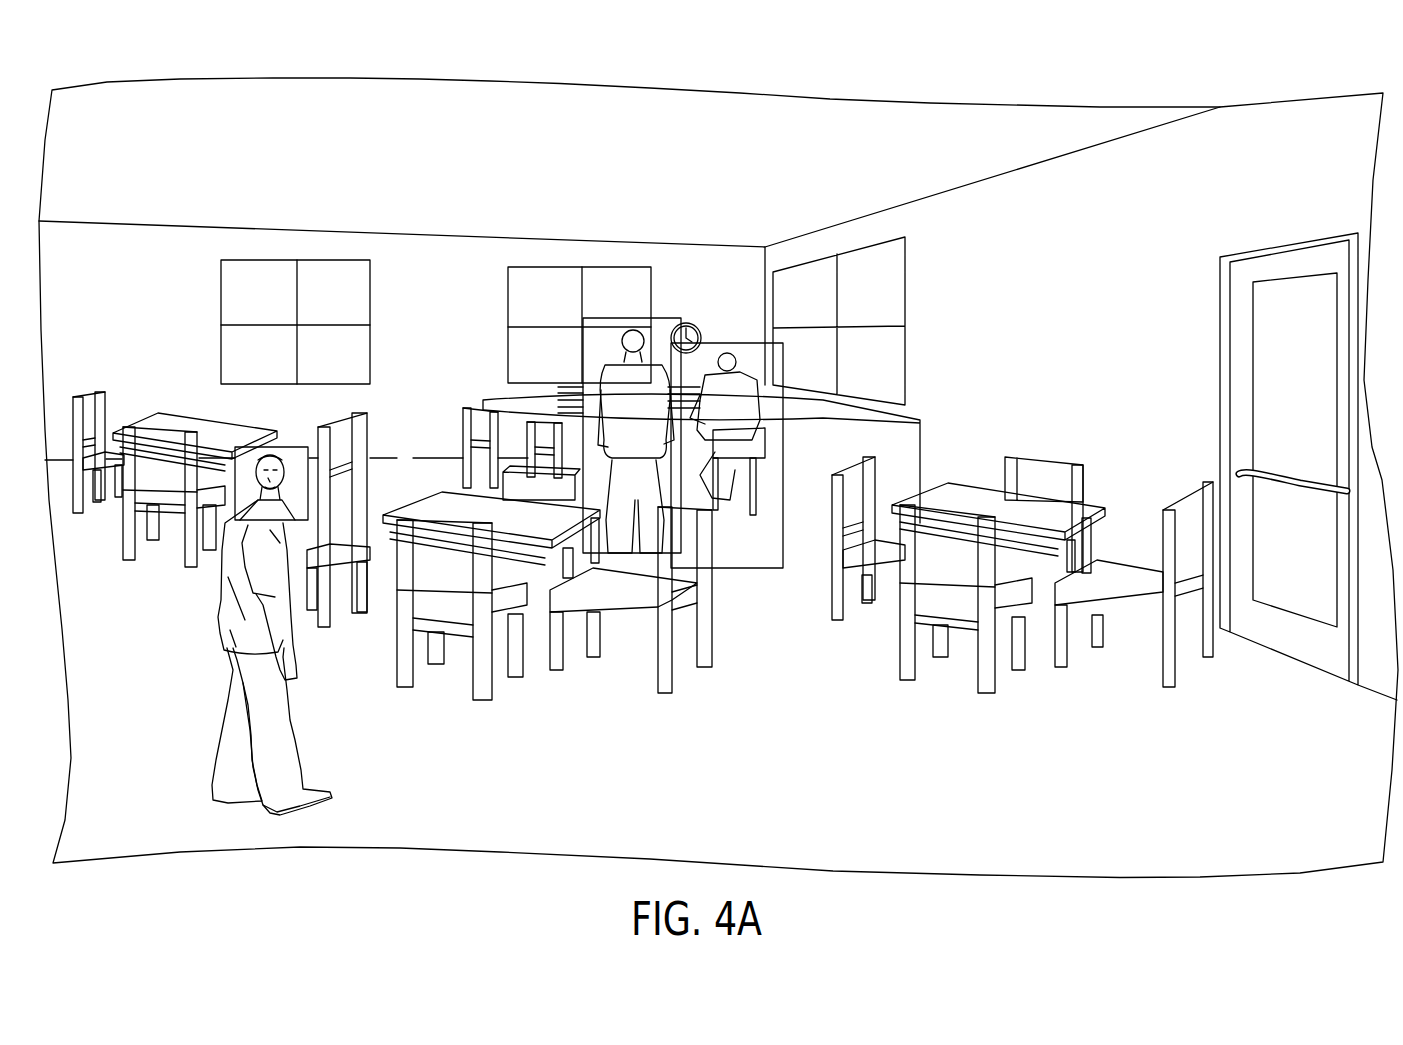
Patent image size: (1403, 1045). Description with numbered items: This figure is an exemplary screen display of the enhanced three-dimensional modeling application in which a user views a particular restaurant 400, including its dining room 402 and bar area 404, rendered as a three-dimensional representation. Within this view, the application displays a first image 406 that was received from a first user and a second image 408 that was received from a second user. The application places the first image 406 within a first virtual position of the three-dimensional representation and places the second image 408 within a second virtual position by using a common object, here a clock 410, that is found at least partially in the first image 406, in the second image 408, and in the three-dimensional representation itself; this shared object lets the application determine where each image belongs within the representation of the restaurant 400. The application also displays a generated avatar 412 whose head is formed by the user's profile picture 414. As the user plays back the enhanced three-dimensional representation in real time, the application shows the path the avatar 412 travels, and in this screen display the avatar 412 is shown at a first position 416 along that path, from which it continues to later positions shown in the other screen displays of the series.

The particular restaurant 400 is at (1229, 93).
The dining room 402 is at (830, 714).
The bar area 404 is at (492, 354).
The first image 406 is at (658, 318).
The second image 408 is at (768, 345).
The clock 410 is at (707, 333).
The avatar 412 is at (188, 637).
The user's profile picture 414 is at (300, 446).
The first position 416 is at (220, 737).